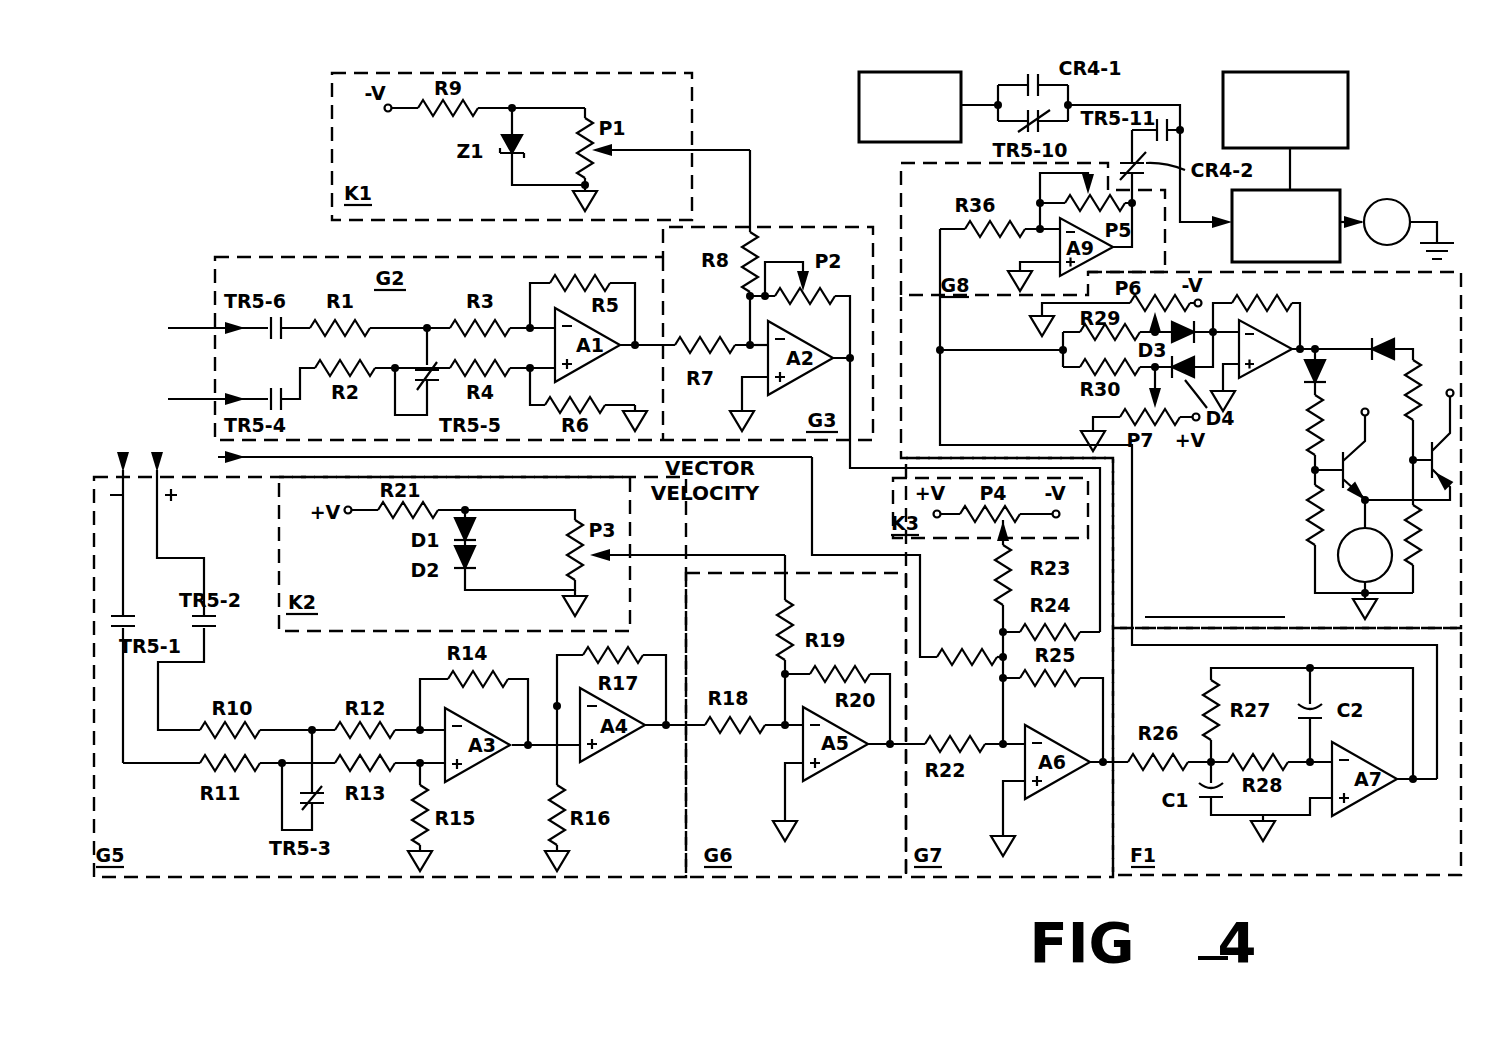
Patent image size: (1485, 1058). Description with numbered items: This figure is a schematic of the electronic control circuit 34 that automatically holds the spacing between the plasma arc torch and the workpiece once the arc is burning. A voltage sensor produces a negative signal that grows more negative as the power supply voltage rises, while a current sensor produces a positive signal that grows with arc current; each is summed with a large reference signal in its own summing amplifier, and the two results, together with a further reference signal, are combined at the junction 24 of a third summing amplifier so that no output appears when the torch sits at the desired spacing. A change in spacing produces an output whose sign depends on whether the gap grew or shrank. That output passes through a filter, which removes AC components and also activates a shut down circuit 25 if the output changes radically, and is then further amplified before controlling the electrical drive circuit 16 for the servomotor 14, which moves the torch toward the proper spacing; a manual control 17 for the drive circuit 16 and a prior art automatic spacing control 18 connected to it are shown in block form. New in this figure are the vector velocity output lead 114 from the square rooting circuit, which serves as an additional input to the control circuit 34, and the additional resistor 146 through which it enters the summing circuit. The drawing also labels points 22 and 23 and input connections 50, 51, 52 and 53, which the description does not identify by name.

The servomotor 14 is at (1400, 198).
The electrical driving means 16 is at (1340, 195).
The manual control 17 is at (1352, 117).
The automatic spacing control 18 is at (895, 124).
The summing junction 22 is at (750, 343).
The summing junction 23 is at (783, 727).
The junction 24 is at (1003, 740).
The shut down circuit 25 is at (1162, 548).
The electronic control circuit 34 is at (250, 250).
The input line 50 is at (186, 340).
The input line 51 is at (178, 418).
The input line 52 is at (157, 468).
The input line 53 is at (123, 468).
The output lead 114 is at (226, 452).
The additional resistor 146 is at (1003, 655).